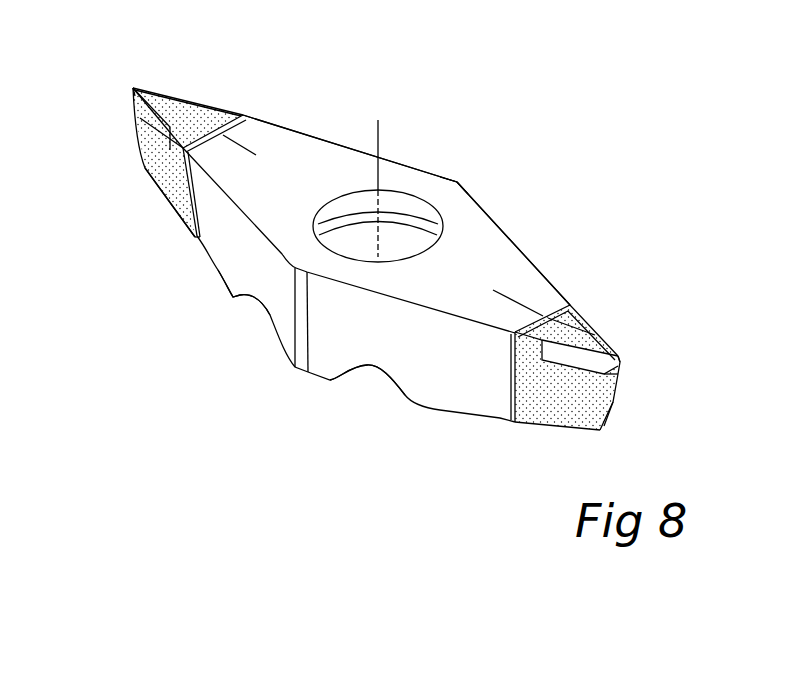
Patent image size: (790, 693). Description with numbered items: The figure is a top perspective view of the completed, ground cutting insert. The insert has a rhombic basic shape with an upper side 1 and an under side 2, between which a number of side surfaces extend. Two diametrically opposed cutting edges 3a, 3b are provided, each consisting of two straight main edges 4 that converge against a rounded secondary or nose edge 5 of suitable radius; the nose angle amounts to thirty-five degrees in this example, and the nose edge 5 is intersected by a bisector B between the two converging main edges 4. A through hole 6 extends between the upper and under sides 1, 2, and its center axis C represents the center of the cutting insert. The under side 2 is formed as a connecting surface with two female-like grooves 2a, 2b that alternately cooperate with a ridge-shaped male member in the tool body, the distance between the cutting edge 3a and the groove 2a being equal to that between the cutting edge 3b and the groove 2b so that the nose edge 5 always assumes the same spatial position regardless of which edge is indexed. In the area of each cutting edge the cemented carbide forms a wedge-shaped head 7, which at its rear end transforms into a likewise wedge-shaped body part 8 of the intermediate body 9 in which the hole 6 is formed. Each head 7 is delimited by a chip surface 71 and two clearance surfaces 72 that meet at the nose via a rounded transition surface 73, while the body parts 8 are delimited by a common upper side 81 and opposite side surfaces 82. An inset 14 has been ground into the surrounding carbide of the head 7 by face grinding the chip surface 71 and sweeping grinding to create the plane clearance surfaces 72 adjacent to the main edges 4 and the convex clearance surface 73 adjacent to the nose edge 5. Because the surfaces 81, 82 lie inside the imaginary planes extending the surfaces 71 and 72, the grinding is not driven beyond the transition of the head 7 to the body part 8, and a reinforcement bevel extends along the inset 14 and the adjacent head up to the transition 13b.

The upper side 1 is at (345, 140).
The under side 2 is at (295, 375).
The groove 2a is at (250, 312).
The groove 2b is at (388, 387).
The cutting edge 3a is at (613, 343).
The cutting edge 3b is at (194, 96).
The main edge 4 is at (177, 92).
The nose edge 5 is at (133, 88).
The through hole 6 is at (360, 233).
The head 7 is at (153, 200).
The body part 8 is at (303, 143).
The intermediate body 9 is at (460, 182).
The transition 13b is at (545, 312).
The inset 14 is at (197, 113).
The chip surface 71 is at (568, 317).
The clearance surface 72 is at (543, 403).
The transition surface 73 is at (619, 374).
The upper side 81 is at (453, 273).
The side surface 82 is at (396, 356).
The bisector B is at (244, 151).
The center axis C is at (378, 143).